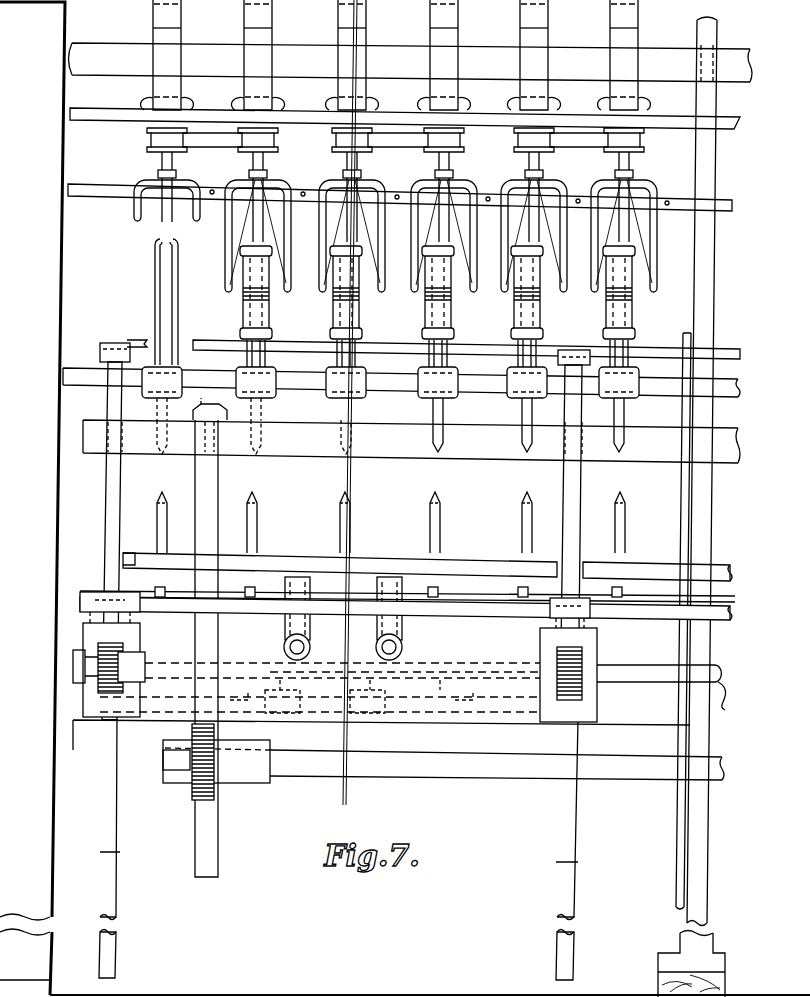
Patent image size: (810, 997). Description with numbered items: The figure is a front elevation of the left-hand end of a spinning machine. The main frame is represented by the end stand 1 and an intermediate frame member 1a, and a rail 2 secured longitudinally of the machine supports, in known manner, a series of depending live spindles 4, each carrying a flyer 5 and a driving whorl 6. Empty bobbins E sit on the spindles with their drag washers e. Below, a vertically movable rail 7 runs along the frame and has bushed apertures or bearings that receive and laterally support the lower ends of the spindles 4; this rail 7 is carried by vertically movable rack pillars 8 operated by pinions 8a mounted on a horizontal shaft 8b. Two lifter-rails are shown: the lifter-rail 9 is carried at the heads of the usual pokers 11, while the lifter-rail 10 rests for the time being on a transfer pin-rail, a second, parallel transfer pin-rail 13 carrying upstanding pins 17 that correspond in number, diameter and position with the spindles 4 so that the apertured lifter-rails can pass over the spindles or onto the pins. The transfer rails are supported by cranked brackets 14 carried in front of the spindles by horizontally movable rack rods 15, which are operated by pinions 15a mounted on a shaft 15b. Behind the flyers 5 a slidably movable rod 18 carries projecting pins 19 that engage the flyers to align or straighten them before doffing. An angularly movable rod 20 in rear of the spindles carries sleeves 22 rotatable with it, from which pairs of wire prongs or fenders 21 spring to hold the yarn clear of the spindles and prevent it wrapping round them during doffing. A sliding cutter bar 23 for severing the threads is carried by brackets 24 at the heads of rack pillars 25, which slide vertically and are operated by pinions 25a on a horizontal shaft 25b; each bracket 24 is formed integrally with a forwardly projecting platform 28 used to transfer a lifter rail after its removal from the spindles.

The end stand 1 is at (405, 498).
The intermediate frame member 1a is at (697, 38).
The rail 2 is at (108, 121).
The driving whorl 6 is at (150, 131).
The flyer 5 is at (185, 182).
The slidably movable rod 18 is at (108, 196).
The projecting pin 19 is at (212, 195).
The wire prong or fender 21 is at (165, 296).
The lifter-rail 10 is at (208, 340).
The empty bobbin E is at (332, 303).
The drag washer e is at (322, 327).
The angularly movable rod 20 is at (76, 370).
The sleeve 22 is at (177, 391).
The live spindle 4 is at (341, 412).
The vertically movable rail 7 is at (483, 453).
The poker 11 is at (107, 508).
The peg or pin 17 is at (157, 522).
The rack pillar 8 is at (206, 508).
The lifter-rail 9 is at (207, 557).
The transfer peg or pin-rail 13 is at (157, 571).
The sliding cutter bar 23 is at (342, 596).
The bracket 24 is at (100, 618).
The forwardly projecting platform 28 is at (112, 640).
The pinion 25a is at (120, 663).
The horizontal shaft 25b is at (488, 668).
The cranked bracket 14 is at (300, 620).
The rack rod 15 is at (310, 647).
The pinion 15a is at (300, 715).
The shaft 15b is at (722, 700).
The horizontal shaft 8b is at (453, 763).
The pinion 8a is at (185, 781).
The rack pillar 25 is at (110, 782).